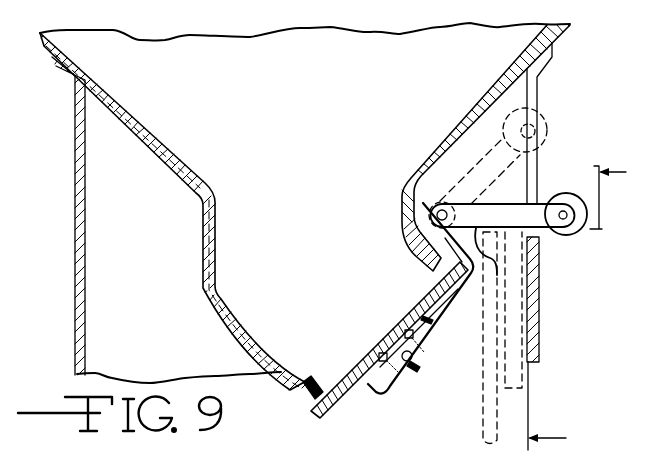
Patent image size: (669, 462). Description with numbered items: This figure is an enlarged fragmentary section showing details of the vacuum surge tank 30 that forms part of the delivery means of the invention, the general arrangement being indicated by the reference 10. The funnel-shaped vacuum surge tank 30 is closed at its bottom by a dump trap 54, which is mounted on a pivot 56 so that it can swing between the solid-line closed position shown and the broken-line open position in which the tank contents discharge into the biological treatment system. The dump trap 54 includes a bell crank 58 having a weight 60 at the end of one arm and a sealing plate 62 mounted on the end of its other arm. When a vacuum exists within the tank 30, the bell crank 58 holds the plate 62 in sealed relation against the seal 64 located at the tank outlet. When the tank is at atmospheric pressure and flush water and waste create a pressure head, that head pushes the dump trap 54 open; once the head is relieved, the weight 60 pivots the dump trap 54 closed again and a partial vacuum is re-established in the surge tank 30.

The section line / apparatus reference 10 is at (593, 307).
The vacuum surge tank 30 is at (180, 154).
The dump trap 54 is at (348, 391).
The pivot 56 is at (442, 211).
The bell crank 58 is at (482, 206).
The weight 60 is at (586, 192).
The sealing plate 62 is at (388, 340).
The seal 64 is at (320, 392).